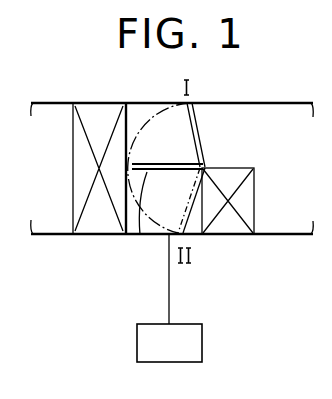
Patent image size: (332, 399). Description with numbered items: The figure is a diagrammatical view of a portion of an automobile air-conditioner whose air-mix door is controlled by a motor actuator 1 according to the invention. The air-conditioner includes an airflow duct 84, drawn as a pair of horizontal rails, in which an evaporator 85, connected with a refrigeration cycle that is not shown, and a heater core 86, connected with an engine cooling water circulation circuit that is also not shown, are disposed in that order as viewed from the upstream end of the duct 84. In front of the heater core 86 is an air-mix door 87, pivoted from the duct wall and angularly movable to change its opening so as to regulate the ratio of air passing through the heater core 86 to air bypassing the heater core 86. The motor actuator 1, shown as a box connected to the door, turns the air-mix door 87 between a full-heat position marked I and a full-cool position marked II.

The airflow duct 84 is at (283, 100).
The evaporator 85 is at (82, 229).
The heater core 86 is at (237, 229).
The air-mix door 87 is at (141, 229).
The motor actuator 1 is at (197, 345).